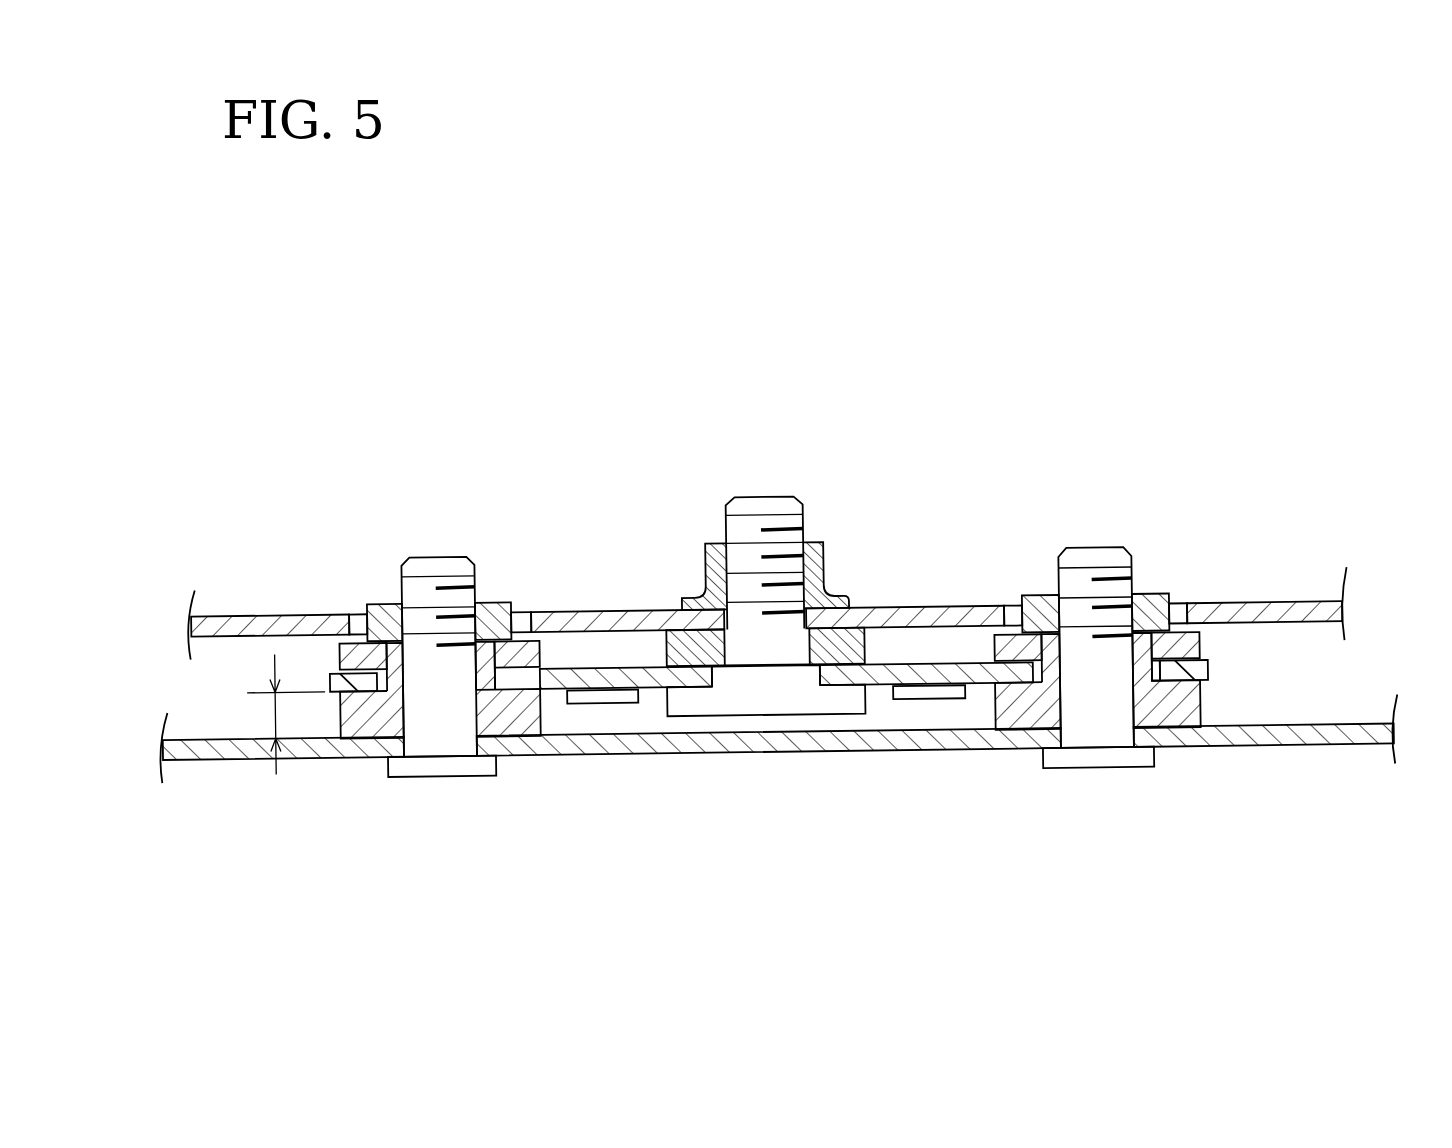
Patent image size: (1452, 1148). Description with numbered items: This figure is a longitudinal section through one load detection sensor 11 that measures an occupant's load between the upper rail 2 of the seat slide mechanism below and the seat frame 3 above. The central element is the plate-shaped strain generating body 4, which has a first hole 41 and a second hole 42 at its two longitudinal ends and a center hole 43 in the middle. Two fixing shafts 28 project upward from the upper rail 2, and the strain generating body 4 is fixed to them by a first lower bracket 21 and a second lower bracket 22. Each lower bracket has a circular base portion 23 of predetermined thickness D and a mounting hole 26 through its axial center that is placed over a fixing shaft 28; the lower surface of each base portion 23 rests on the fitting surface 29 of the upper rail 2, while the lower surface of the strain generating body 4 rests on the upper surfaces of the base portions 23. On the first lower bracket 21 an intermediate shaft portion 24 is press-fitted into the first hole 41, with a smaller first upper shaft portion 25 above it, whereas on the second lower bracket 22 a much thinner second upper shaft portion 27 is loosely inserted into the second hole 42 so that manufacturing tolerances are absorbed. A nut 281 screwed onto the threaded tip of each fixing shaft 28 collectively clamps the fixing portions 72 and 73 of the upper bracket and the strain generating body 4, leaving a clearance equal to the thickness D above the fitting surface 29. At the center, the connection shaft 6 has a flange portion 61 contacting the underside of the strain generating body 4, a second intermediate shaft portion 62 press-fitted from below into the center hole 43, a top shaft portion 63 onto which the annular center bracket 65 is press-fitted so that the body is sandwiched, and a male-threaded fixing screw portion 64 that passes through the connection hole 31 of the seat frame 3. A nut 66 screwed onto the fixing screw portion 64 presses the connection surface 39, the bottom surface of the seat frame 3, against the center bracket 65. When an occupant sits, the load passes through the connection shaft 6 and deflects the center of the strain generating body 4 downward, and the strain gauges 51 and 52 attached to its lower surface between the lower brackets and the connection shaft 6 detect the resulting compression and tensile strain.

The upper rail 2 is at (779, 756).
The seat frame 3 is at (816, 564).
The strain generating body 4 is at (806, 664).
The connection shaft 6 is at (767, 762).
The load detection sensor 11 is at (527, 306).
The first lower bracket 21 is at (522, 710).
The second lower bracket 22 is at (1182, 733).
The base portion 23 is at (342, 706).
The first intermediate shaft portion 24 is at (386, 695).
The first upper shaft portion 25 is at (416, 695).
The mounting hole 26 is at (482, 706).
The second upper shaft portion 27 is at (1167, 753).
The fixing shaft 28 is at (438, 568).
The nut 281 is at (388, 598).
The fitting surface 29 is at (1270, 731).
The connection hole 31 is at (671, 609).
The connection surface 39 is at (1290, 629).
The first hole 41 is at (503, 674).
The second hole 42 is at (1202, 673).
The center hole 43 is at (820, 676).
The strain gauge 51 is at (612, 695).
The strain gauge 52 is at (915, 700).
The flange portion 61 is at (668, 699).
The second intermediate shaft portion 62 is at (723, 647).
The top shaft portion 63 is at (776, 660).
The fixing screw portion 64 is at (750, 528).
The center bracket 65 is at (644, 608).
The nut 66 is at (836, 584).
The fixing portion 72 is at (352, 652).
The fixing portion 73 is at (1200, 649).